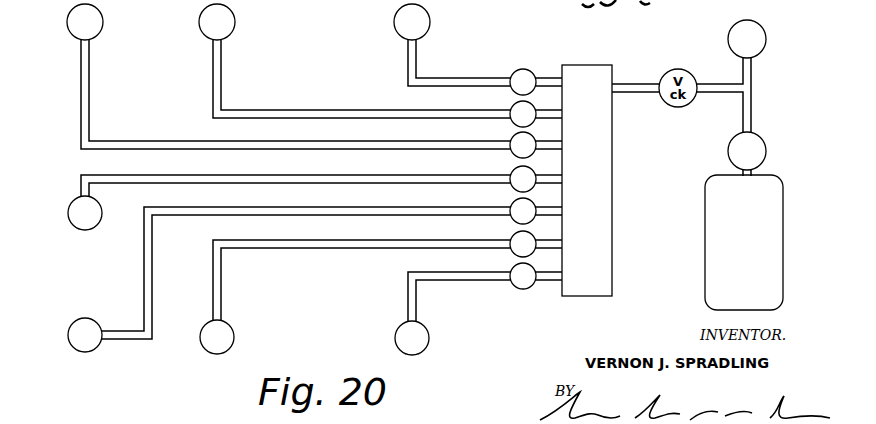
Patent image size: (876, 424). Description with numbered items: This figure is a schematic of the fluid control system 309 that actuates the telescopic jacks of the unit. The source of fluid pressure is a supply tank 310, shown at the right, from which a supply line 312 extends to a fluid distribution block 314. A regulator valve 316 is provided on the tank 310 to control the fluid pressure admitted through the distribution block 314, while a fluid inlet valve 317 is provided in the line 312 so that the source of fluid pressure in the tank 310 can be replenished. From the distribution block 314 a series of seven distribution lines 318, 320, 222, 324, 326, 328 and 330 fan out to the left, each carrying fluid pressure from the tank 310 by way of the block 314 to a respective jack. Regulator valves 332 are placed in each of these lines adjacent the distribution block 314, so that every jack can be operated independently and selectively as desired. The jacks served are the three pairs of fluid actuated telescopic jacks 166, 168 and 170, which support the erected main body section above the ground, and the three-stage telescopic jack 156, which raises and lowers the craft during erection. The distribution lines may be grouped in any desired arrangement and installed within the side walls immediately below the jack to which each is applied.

The fluid control system 309 is at (288, 75).
The supply tank 310 is at (785, 263).
The supply line 312 is at (757, 108).
The fluid distribution block 314 is at (612, 275).
The regulator valve 316 is at (767, 151).
The fluid inlet valve 317 is at (767, 37).
The distribution line 318 is at (457, 78).
The distribution line 320 is at (284, 109).
The distribution line 222 is at (138, 141).
The distribution line 324 is at (120, 184).
The distribution line 326 is at (185, 216).
The distribution line 328 is at (303, 250).
The distribution line 330 is at (462, 282).
The regulator valves 332 is at (528, 69).
The three-stage telescopic jack 156 is at (80, 229).
The telescopic jacks 166 is at (396, 35).
The telescopic jacks 168 is at (231, 31).
The telescopic jacks 170 is at (99, 32).